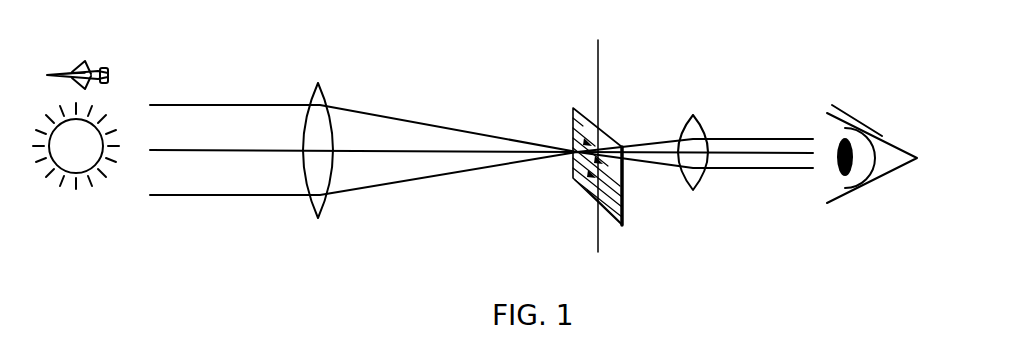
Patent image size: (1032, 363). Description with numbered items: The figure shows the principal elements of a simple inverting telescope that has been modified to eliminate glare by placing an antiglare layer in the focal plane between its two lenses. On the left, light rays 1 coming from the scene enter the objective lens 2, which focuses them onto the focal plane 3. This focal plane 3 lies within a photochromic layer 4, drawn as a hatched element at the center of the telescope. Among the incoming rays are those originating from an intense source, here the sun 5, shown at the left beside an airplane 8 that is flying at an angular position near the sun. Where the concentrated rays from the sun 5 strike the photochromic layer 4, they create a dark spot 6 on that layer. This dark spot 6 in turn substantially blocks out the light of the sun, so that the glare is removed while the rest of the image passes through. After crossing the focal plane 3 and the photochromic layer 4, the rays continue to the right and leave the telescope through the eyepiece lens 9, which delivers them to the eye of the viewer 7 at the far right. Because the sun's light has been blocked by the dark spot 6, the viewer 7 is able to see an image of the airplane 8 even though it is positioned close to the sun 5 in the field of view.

The light rays 1 is at (277, 104).
The objective lens 2 is at (314, 207).
The focal plane 3 is at (598, 228).
The photochromic layer 4 is at (604, 130).
The sun 5 is at (63, 178).
The dark spot 6 is at (577, 130).
The viewer 7 is at (878, 135).
The airplane 8 is at (88, 60).
The eyepiece lens 9 is at (700, 185).